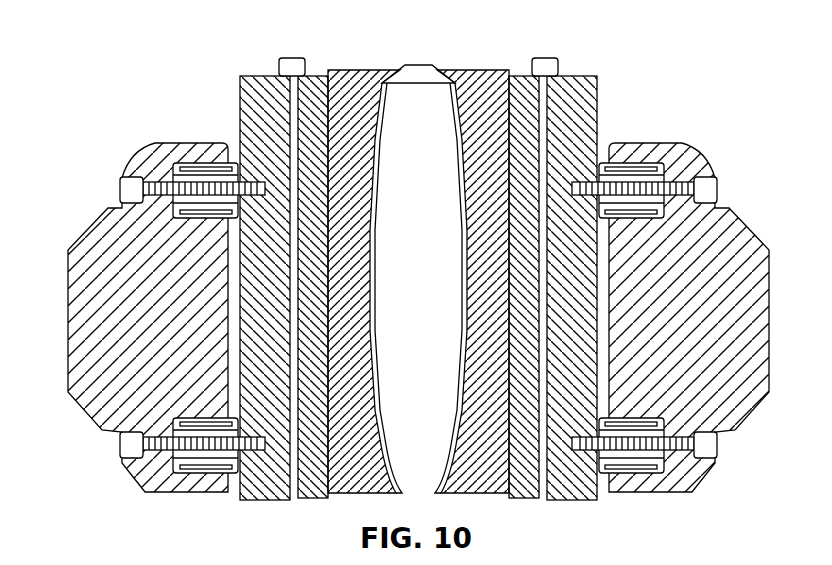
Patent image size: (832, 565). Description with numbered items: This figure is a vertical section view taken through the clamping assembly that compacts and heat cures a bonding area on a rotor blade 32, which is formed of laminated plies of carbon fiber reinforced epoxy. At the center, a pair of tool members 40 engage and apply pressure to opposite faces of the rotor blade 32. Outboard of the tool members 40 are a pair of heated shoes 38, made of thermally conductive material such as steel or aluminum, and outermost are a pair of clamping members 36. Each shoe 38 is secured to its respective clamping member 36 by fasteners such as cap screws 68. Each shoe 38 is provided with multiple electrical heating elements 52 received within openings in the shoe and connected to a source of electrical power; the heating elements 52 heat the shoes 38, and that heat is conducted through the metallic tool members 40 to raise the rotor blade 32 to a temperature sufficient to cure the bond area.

The rotor blade 32 is at (418, 95).
The clamping member 36 is at (112, 297).
The heated shoe 38 is at (258, 118).
The tool member 40 is at (346, 98).
The electrical heating element 52 is at (291, 66).
The cap screw 68 is at (127, 191).